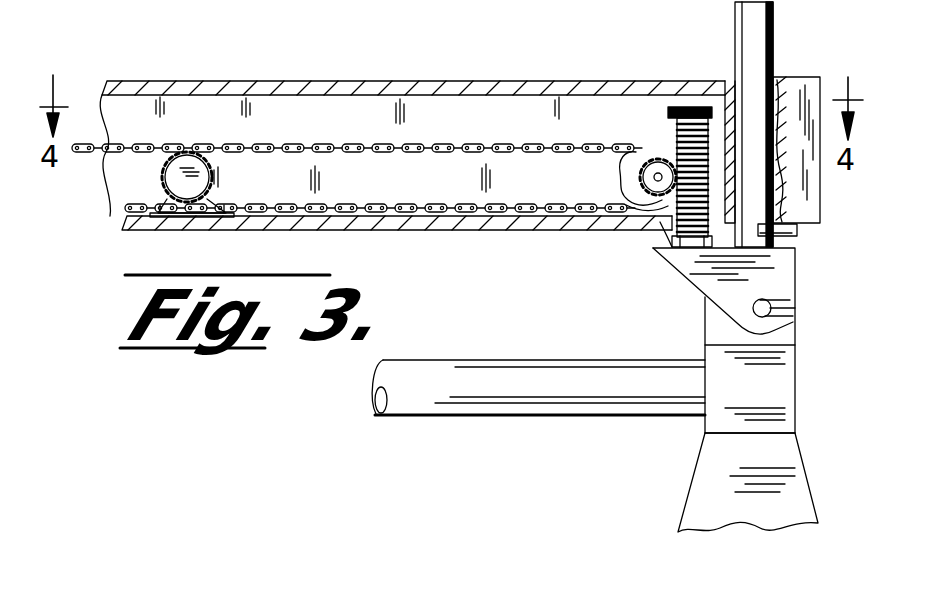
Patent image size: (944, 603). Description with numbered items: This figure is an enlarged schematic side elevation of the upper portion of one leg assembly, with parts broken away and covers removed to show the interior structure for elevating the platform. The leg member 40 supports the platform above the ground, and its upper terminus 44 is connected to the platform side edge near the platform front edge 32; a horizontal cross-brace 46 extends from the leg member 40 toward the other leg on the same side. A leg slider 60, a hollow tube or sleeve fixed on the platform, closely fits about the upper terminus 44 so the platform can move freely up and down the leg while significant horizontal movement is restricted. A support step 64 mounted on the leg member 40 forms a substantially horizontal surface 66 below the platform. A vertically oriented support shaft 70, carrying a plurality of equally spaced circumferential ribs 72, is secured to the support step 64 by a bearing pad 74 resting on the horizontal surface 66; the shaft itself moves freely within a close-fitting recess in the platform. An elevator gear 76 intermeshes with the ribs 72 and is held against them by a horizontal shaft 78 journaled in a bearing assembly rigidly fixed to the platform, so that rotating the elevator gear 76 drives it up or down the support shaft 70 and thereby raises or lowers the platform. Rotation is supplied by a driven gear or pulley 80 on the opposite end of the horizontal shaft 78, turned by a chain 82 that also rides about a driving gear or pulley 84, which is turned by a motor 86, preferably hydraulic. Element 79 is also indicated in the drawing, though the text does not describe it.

The front edge 32 is at (816, 92).
The leg member 40 is at (785, 332).
The upper terminus 44 is at (780, 233).
The horizontal cross-brace 46 is at (533, 380).
The leg slider 60 is at (777, 150).
The support step 64 is at (770, 272).
The horizontal surface 66 is at (652, 250).
The support shaft 70 is at (717, 122).
The circumferential ribs 72 is at (685, 110).
The bearing pad 74 is at (650, 248).
The elevator gear 76 is at (655, 153).
The horizontal shaft 78 is at (652, 225).
The chain guide 79 is at (626, 190).
The driven gear or pulley 80 is at (627, 167).
The chain 82 is at (300, 143).
The driving gear or pulley 84 is at (163, 173).
The motor 86 is at (185, 182).